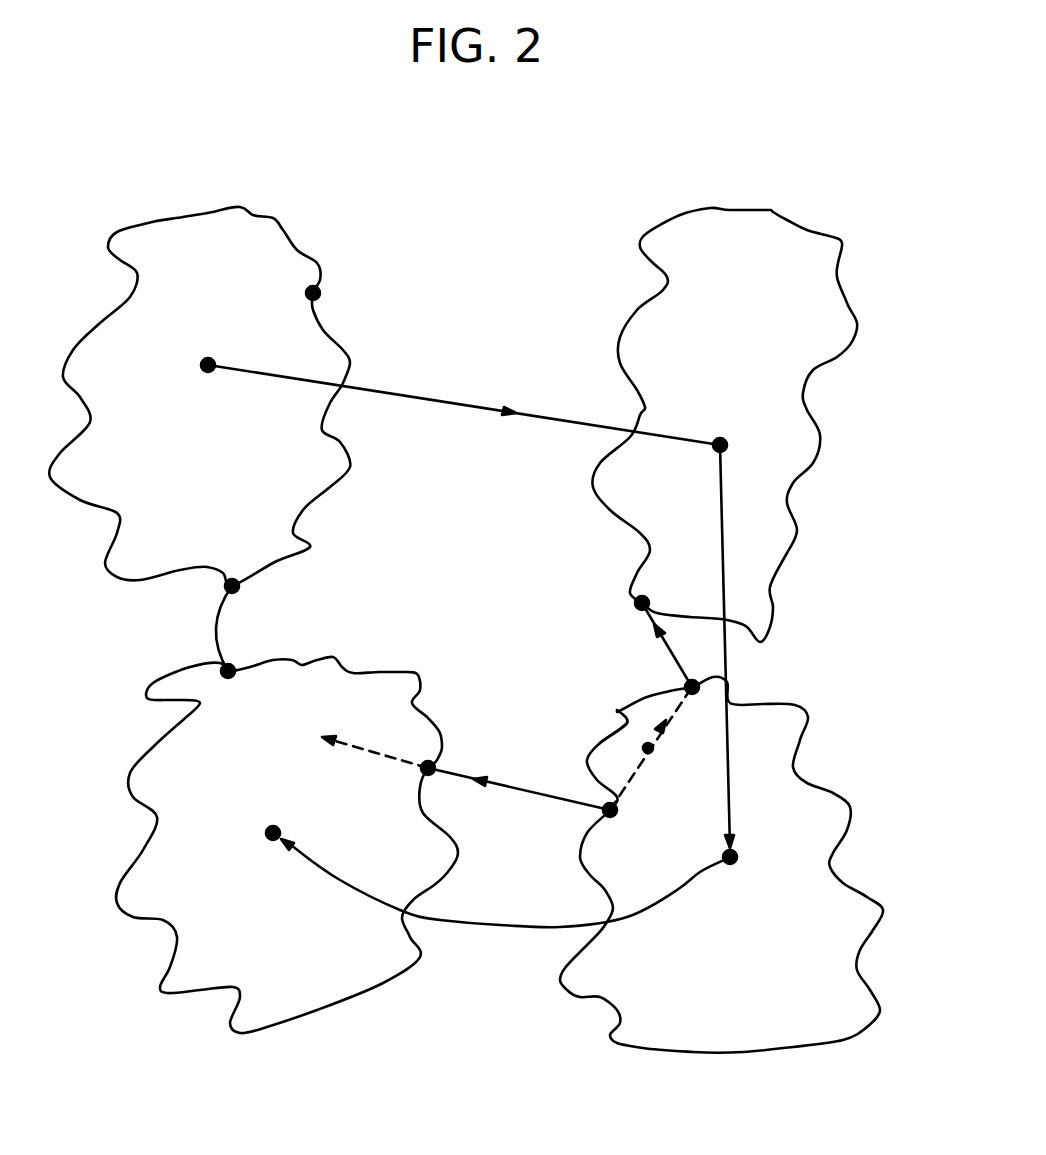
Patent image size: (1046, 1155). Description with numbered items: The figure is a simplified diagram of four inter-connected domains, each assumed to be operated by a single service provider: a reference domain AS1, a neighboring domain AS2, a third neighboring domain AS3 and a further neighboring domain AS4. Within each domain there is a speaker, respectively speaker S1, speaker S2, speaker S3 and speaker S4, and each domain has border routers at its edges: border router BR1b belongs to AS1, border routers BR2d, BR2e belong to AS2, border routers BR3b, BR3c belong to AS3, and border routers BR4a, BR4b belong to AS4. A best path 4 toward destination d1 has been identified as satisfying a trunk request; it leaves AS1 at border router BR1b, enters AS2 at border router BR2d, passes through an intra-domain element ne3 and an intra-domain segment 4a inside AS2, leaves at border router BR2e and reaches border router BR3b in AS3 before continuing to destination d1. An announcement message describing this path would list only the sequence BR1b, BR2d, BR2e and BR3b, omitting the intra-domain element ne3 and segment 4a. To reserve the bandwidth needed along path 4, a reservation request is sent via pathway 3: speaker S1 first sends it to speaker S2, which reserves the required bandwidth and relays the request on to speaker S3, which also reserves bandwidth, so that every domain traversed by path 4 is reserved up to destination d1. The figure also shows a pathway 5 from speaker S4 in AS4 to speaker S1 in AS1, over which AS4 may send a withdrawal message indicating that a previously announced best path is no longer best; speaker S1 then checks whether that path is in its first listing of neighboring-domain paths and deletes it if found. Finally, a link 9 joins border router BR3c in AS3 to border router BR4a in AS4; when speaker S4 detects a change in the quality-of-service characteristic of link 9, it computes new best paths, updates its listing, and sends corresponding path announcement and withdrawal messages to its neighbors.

The domain AS1 is at (710, 208).
The domain AS2 is at (588, 993).
The domain AS3 is at (162, 995).
The domain AS4 is at (148, 223).
The speaker S1 is at (727, 428).
The speaker S2 is at (748, 871).
The speaker S3 is at (282, 815).
The speaker S4 is at (210, 344).
The border router BR4b is at (349, 308).
The border router BR4a is at (265, 598).
The border router BR3c is at (233, 689).
The border router BR3b is at (465, 756).
The border router BR1b is at (672, 591).
The border router BR2d is at (717, 706).
The border router BR2e is at (644, 819).
The intra-domain element ne3 is at (655, 752).
The destination d1 is at (359, 742).
The pathway 3 is at (725, 567).
The best path 4 is at (663, 650).
The segment 4a is at (626, 752).
The pathway 5 is at (458, 400).
The link 9 is at (213, 630).